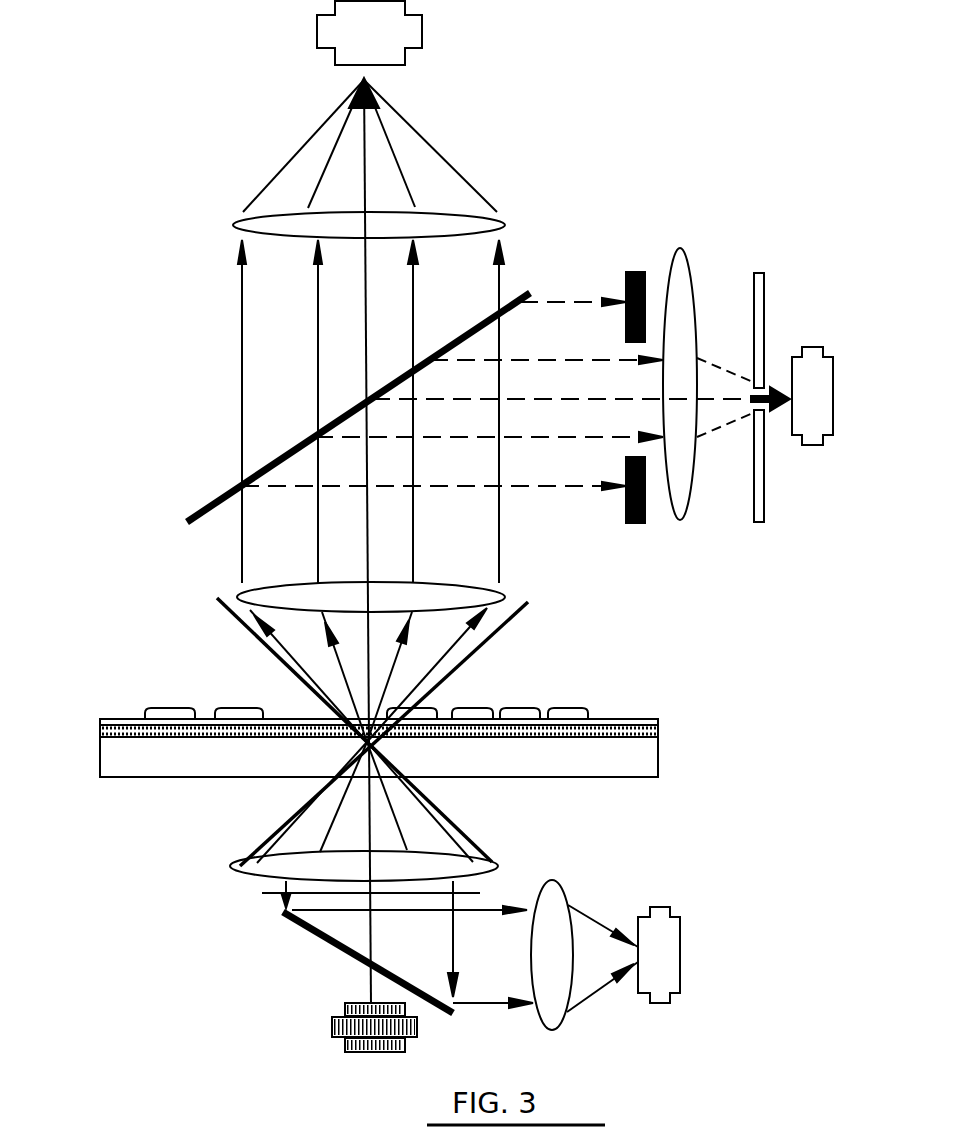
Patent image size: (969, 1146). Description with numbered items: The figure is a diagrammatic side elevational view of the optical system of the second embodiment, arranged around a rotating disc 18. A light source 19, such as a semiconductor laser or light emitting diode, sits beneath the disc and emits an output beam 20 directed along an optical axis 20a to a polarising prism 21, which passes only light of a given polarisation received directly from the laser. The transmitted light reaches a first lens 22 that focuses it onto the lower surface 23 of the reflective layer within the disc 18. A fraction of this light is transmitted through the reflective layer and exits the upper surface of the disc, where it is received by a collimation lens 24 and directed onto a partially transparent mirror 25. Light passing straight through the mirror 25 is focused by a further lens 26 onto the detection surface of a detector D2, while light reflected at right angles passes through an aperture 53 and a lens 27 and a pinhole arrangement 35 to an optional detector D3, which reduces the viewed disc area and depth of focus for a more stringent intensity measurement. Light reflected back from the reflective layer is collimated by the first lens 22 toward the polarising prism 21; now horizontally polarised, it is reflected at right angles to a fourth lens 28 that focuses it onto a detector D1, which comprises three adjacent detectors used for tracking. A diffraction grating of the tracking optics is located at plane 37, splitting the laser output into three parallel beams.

The disc 18 is at (165, 753).
The light source 19 is at (345, 1047).
The output beam 20 is at (360, 982).
The optical axis 20a is at (357, 777).
The polarising prism 21 is at (453, 1020).
The first lens 22 is at (495, 857).
The lower surface of the reflective layer 23 is at (643, 737).
The collimation lens 24 is at (505, 597).
The partially transparent mirror 25 is at (230, 483).
The further lens 26 is at (277, 223).
The lens 27 is at (682, 487).
The fourth lens 28 is at (548, 912).
The pinhole arrangement 35 is at (758, 275).
The plane 37 is at (267, 903).
The aperture 53 is at (628, 268).
The detector D1 is at (665, 962).
The detector D2 is at (400, 35).
The detector D3 is at (815, 347).